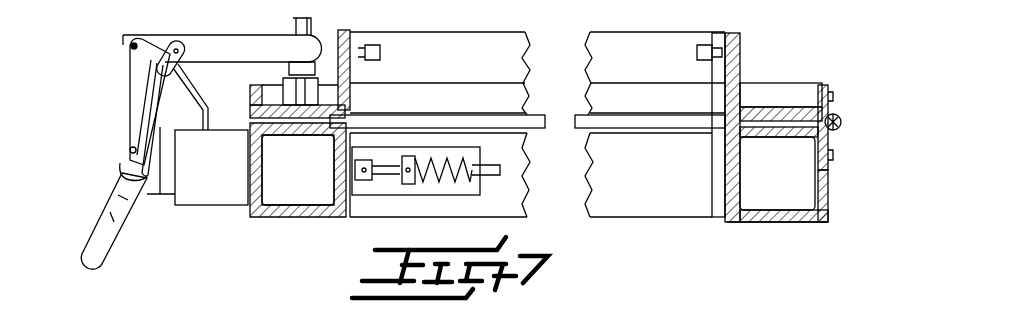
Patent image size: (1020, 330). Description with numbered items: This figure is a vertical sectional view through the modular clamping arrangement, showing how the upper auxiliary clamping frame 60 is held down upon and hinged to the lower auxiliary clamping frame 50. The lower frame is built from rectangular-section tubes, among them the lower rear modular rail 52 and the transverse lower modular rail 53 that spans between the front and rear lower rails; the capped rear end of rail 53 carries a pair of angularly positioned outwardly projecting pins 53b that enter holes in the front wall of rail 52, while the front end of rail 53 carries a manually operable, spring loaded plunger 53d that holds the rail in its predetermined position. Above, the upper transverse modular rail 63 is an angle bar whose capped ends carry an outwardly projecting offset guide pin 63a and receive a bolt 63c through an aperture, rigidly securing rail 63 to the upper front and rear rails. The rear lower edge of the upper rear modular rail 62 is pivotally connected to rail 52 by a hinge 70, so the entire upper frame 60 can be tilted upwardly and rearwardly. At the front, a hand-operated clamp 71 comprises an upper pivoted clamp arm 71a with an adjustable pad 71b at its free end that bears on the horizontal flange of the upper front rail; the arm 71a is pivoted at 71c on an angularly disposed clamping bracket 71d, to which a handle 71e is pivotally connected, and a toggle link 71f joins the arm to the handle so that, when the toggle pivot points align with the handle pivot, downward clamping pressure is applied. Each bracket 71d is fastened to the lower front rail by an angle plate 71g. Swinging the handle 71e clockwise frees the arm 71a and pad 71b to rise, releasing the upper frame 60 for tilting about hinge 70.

The hand-operated clamp 71 is at (148, 102).
The upper pivoted clamp arm 71a is at (254, 40).
The pad 71b is at (300, 85).
The pivot 71c is at (132, 46).
The clamping bracket 71d is at (146, 68).
The handle 71e is at (114, 193).
The toggle link 71f is at (148, 113).
The angle plate 71g is at (213, 193).
The spring loaded plunger 53d is at (336, 162).
The right-hand transverse lower modular rail 53 is at (529, 165).
The pins 53b is at (740, 175).
The upper transverse modular rail 63 is at (527, 52).
The offset guide pin 63a is at (372, 100).
The bolt 63c is at (382, 53).
The lower auxiliary clamping frame 50 is at (700, 222).
The rear modular rail 52 is at (768, 225).
The upper auxiliary clamping frame 60 is at (823, 84).
The upper rear modular rail 62 is at (772, 108).
The hinge 70 is at (842, 123).